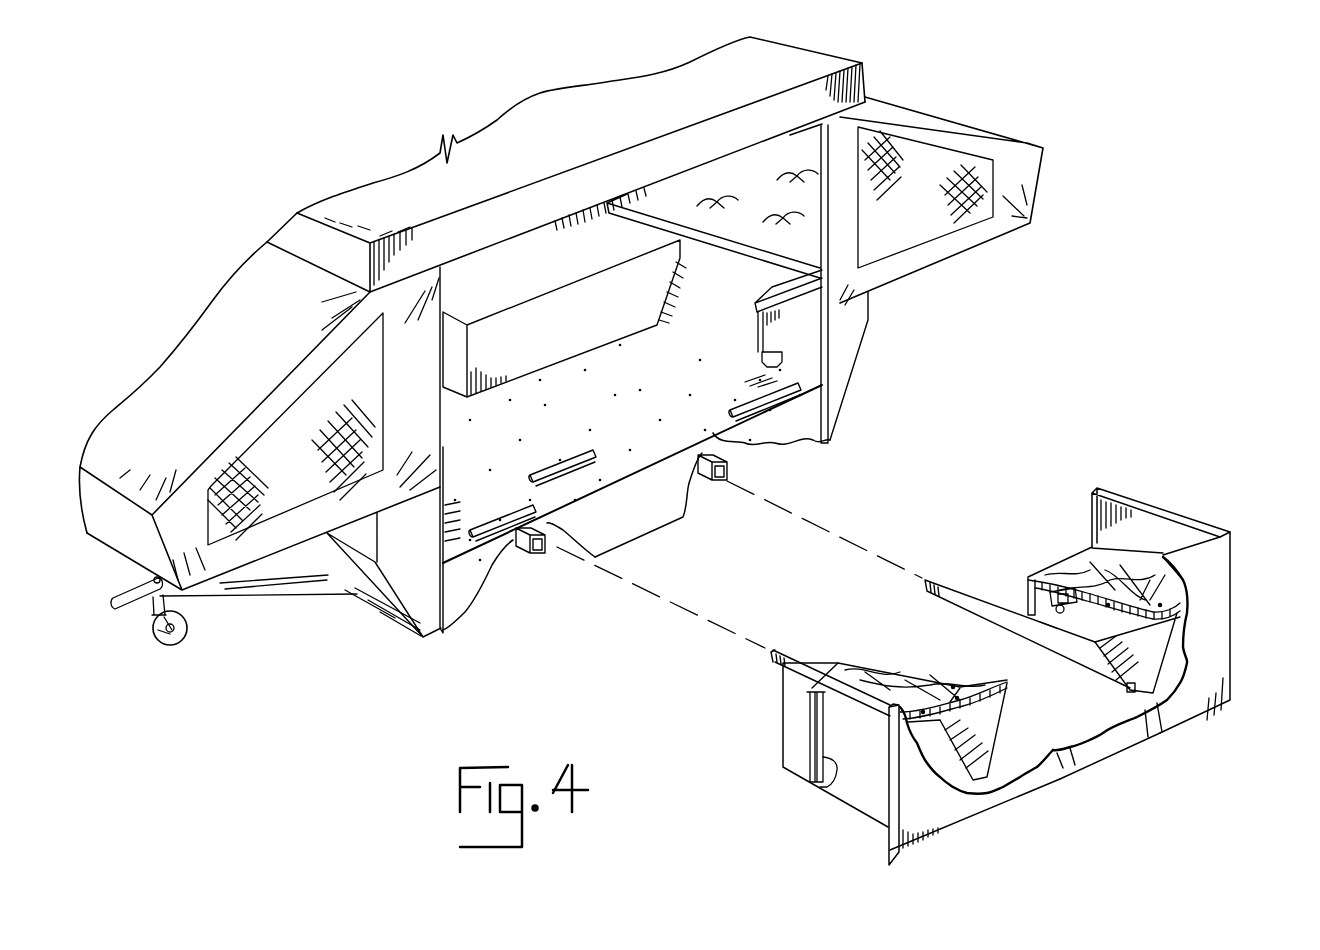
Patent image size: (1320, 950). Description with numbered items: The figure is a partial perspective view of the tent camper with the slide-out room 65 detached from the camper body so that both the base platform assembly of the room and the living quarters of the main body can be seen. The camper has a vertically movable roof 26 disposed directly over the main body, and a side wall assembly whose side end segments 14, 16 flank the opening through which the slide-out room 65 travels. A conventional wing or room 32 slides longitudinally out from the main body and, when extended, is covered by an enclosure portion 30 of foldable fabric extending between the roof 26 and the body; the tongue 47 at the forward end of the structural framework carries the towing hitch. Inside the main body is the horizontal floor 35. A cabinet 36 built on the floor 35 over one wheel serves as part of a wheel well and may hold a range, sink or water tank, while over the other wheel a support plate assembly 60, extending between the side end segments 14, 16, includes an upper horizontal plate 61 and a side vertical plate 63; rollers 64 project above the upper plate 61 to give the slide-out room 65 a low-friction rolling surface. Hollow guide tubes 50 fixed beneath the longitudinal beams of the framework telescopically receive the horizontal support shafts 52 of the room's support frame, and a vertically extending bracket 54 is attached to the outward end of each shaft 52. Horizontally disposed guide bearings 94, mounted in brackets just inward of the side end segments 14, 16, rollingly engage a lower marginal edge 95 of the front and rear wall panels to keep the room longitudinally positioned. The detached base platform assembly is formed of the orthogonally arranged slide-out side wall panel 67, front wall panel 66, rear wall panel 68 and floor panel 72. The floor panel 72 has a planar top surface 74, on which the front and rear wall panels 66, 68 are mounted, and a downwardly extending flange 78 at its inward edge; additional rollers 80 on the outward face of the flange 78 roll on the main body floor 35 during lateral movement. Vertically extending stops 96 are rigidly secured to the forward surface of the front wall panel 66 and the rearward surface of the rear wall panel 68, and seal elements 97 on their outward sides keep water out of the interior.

The roof 26 is at (597, 113).
The room 32 is at (101, 537).
The side end segment 14 is at (437, 635).
The tongue 47 is at (253, 592).
The cabinet 36 is at (525, 279).
The floor 35 is at (622, 378).
The upper plate 61 is at (713, 427).
The enclosure portion 30 is at (760, 185).
The side end segment 16 is at (847, 397).
The guide bearings 94 is at (782, 357).
The rollers 64 is at (728, 410).
The guide tubes 50 is at (703, 483).
The vertical plate 63 is at (620, 530).
The support plate assembly 60 is at (652, 536).
The support shafts 52 is at (788, 658).
The slide-out room 65 is at (1124, 601).
The rear wall panel 68 is at (1168, 513).
The slide-out side wall panel 67 is at (1205, 657).
The floor panel 72 is at (1041, 570).
The flange 78 is at (1027, 598).
The rollers 80 is at (1047, 642).
The front wall panel 66 is at (893, 787).
The lower marginal edge 95 is at (880, 822).
The stops 96 is at (807, 732).
The seal elements 97 is at (837, 757).
The top surface 74 is at (1117, 587).
The bracket 54 is at (1137, 660).